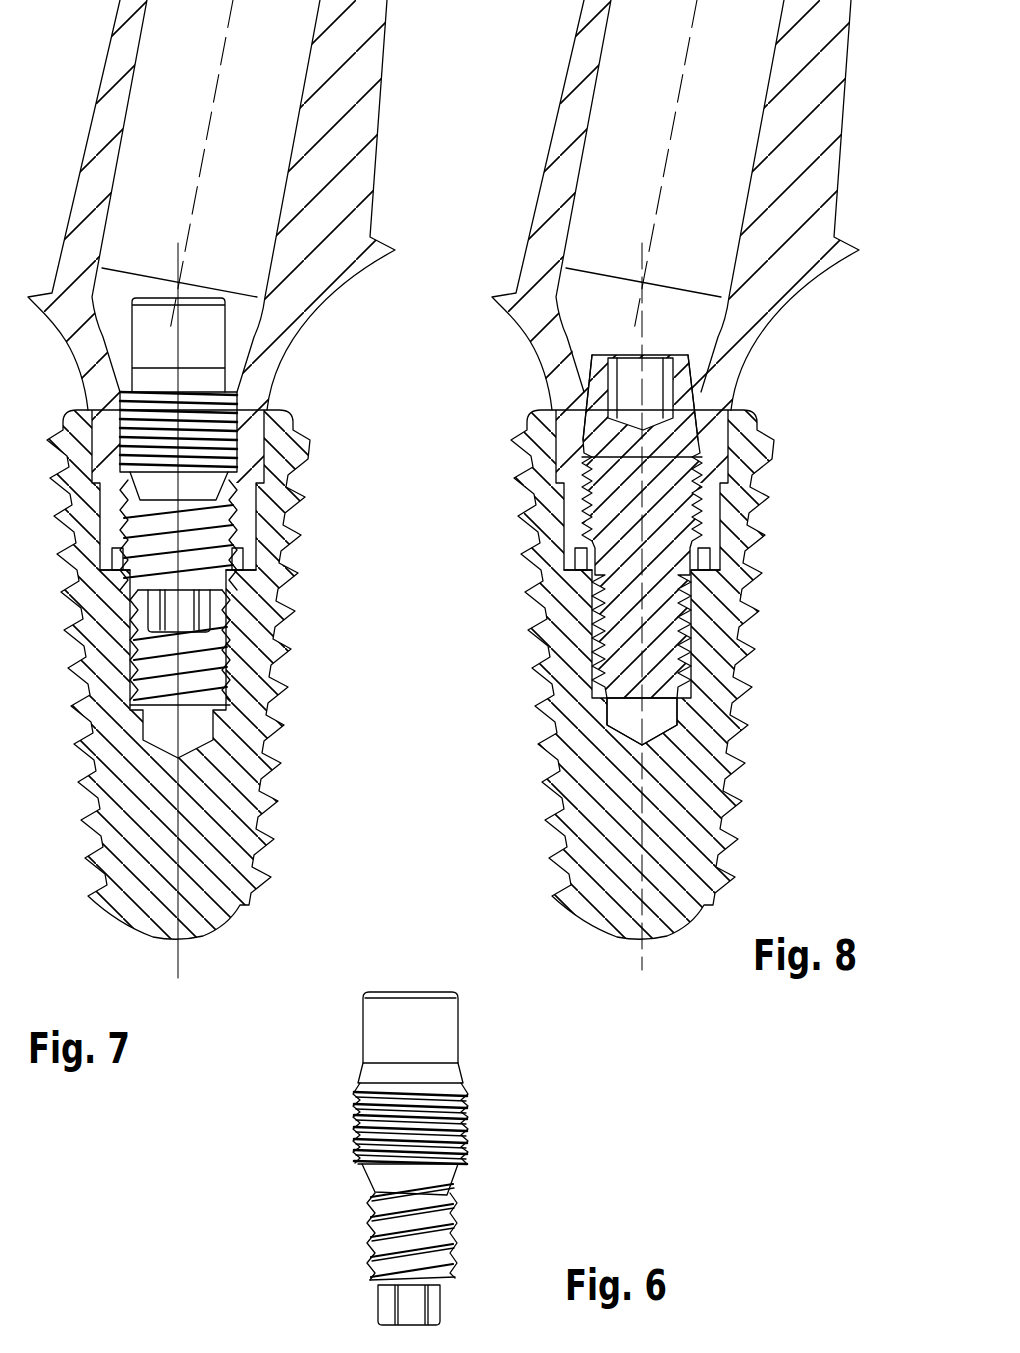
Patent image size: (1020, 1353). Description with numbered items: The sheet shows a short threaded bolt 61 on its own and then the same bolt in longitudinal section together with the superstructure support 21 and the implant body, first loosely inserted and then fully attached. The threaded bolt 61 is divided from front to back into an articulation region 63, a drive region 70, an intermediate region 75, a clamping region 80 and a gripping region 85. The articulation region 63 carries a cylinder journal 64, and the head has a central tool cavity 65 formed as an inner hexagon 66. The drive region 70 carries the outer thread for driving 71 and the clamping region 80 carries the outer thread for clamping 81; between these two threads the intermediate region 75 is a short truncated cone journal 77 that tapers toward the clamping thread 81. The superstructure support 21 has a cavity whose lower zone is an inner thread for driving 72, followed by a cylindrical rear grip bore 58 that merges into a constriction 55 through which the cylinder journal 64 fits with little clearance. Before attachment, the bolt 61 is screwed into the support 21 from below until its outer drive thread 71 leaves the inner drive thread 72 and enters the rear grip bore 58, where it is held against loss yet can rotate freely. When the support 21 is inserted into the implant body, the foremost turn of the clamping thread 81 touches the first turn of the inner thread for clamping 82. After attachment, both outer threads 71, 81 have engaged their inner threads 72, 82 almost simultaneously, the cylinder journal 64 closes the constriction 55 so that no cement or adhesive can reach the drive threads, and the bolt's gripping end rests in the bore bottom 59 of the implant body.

In FIG. 7, the superstructure support 21 is at (313, 260).
In FIG. 8, the superstructure support 21 is at (780, 260).
In FIG. 7, the outer thread for driving 71 is at (215, 422).
In FIG. 7, the inner thread for driving 72 is at (215, 517).
In FIG. 7, the outer thread for clamping 81 is at (233, 560).
In FIG. 7, the inner thread for clamping 82 is at (223, 660).
In FIG. 8, the tool cavity 65 is at (652, 378).
In FIG. 8, the constriction 55 is at (688, 378).
In FIG. 8, the inner hexagon 66 is at (652, 398).
In FIG. 8, the rear grip bore 58 is at (698, 438).
In FIG. 8, the bore bottom element 59 is at (642, 718).
In FIG. 6, the articulation region 63 is at (358, 1033).
In FIG. 6, the cylinder journal 64 is at (438, 1033).
In FIG. 6, the drive region 70 is at (350, 1113).
In FIG. 6, the short threaded bolt 61 is at (480, 1145).
In FIG. 6, the intermediate region 75 is at (362, 1177).
In FIG. 6, the truncated cone journal 77 is at (437, 1177).
In FIG. 6, the clamping region 80 is at (367, 1228).
In FIG. 6, the gripping region 85 is at (375, 1300).